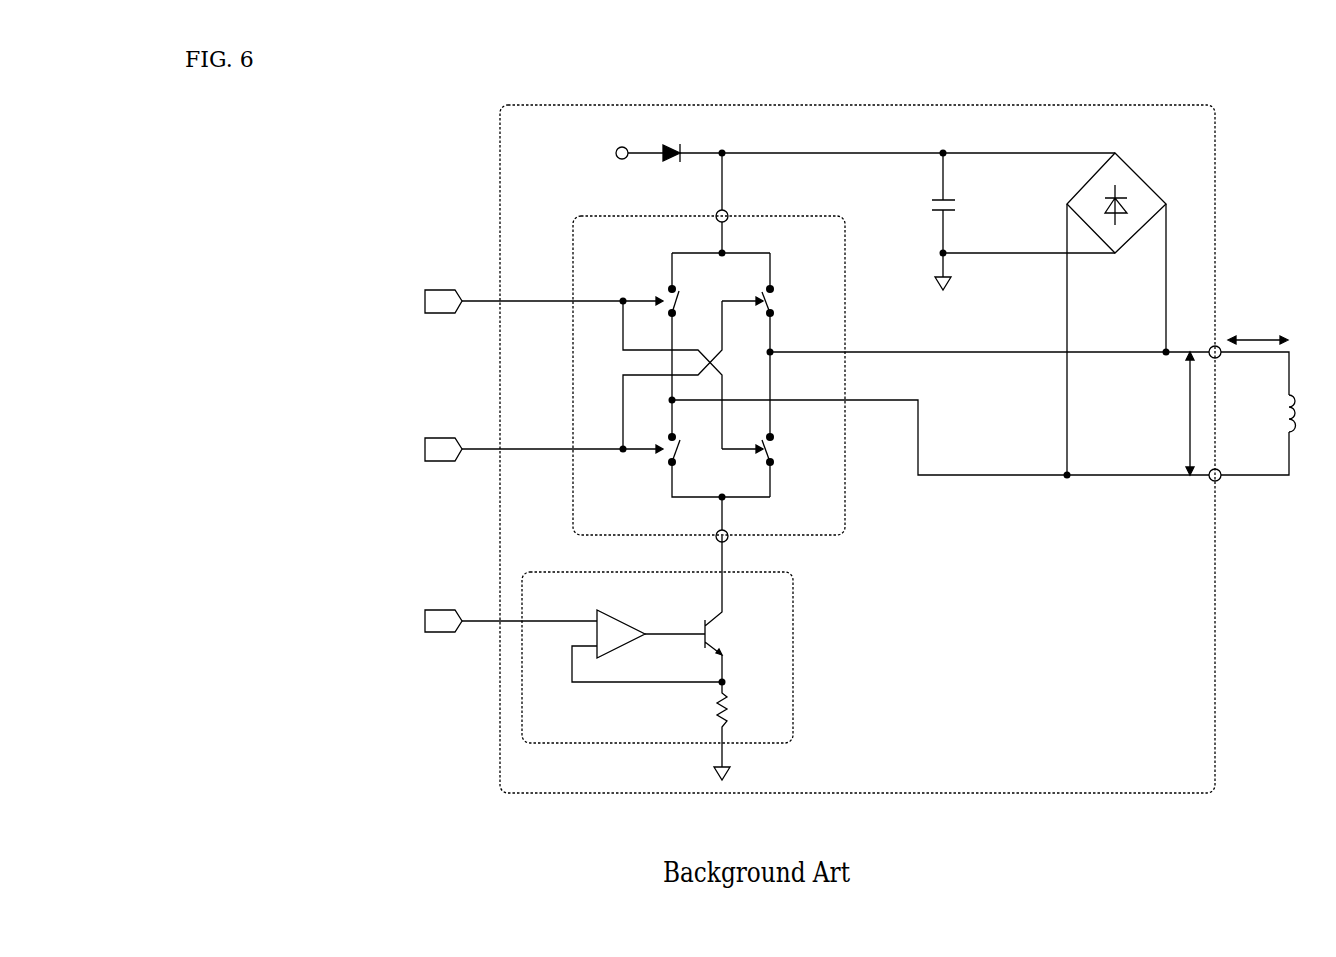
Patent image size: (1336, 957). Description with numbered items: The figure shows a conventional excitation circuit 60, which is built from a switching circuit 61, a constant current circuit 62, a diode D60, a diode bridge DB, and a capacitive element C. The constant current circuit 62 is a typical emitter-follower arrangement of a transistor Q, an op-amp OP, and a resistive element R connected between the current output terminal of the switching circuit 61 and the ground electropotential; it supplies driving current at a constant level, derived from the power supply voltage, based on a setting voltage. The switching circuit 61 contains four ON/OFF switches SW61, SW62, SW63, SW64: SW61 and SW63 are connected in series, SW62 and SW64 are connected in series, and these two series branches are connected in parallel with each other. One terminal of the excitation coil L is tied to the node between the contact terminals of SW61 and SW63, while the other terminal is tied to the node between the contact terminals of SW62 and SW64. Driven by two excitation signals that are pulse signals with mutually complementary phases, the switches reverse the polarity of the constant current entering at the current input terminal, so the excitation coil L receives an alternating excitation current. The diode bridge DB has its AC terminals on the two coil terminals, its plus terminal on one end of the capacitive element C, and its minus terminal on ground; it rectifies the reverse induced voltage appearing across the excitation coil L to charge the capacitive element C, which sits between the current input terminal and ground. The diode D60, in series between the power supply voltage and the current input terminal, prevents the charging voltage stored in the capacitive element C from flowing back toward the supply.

The excitation circuit 60 is at (553, 105).
The switching circuit 61 is at (628, 216).
The constant current circuit 62 is at (582, 572).
The diode D60 is at (668, 143).
The switching circuit SW61 is at (643, 297).
The switching circuit SW62 is at (791, 301).
The switching circuit SW63 is at (644, 454).
The switching circuit SW64 is at (791, 449).
The capacitive element C is at (952, 203).
The diode bridge DB is at (1119, 203).
The op-amp OP is at (632, 634).
The transistor Q is at (724, 595).
The resistive element R is at (729, 724).
The excitation coil L is at (1283, 413).